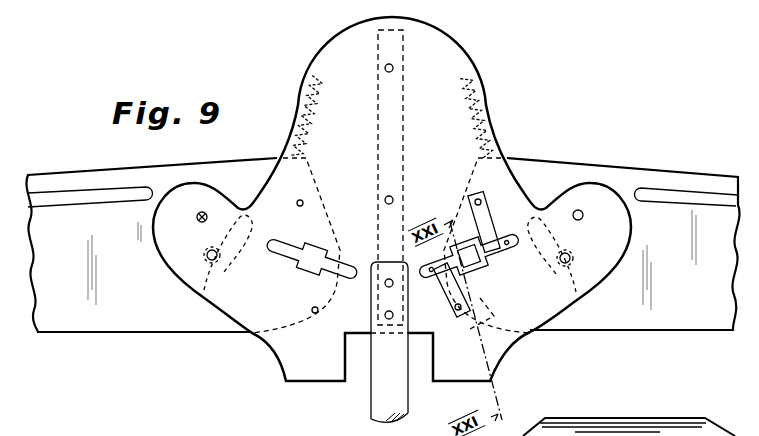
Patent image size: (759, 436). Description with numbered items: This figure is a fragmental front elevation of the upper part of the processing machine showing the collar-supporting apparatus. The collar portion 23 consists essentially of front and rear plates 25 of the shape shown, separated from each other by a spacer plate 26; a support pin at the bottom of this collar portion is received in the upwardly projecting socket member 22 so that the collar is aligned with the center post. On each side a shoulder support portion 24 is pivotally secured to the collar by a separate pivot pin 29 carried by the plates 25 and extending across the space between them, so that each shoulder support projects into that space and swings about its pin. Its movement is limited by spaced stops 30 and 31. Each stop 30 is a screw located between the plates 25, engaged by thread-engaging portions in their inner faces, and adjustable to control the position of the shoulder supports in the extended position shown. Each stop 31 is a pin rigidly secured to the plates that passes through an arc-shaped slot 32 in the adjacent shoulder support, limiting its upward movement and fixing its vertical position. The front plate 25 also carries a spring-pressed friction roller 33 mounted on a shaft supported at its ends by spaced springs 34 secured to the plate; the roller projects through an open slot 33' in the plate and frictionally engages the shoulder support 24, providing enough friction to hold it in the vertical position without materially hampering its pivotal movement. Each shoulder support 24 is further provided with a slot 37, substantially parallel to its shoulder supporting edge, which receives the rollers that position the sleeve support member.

The socket member 22 is at (372, 400).
The collar portion 23 is at (308, 68).
The shoulder support portion 24 is at (221, 160).
The front and rear plates 25 is at (449, 49).
The spacer plate 26 is at (403, 113).
The pivot pin 29 is at (199, 213).
The stop 30 is at (297, 105).
The stop 31 is at (206, 257).
The arc-shaped slot 32 is at (206, 289).
The friction roller 33 is at (469, 259).
The open slot 33' is at (304, 259).
The spring 34 is at (468, 194).
The slot 37 is at (76, 190).